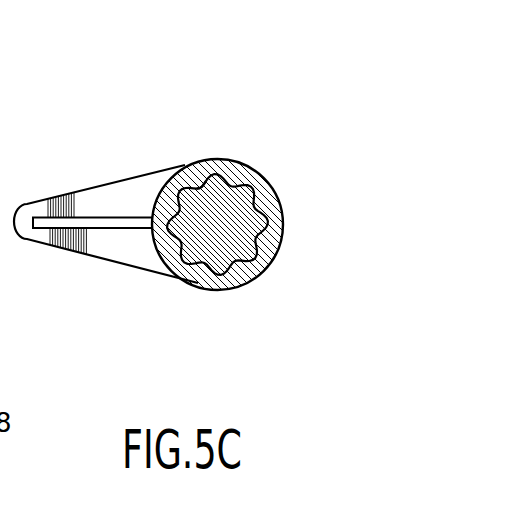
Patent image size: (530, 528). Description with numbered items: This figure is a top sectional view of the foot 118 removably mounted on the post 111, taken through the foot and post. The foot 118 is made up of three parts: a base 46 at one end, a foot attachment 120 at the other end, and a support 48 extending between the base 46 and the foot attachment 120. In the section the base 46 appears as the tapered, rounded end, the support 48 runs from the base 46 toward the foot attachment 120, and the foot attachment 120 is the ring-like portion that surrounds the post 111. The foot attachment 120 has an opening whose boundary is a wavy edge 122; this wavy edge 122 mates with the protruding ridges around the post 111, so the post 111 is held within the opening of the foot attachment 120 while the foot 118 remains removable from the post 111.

The base 46 is at (93, 203).
The support 48 is at (118, 218).
The post 111 is at (227, 208).
The foot 118 is at (131, 284).
The foot attachment 120 is at (283, 231).
The wavy edge 122 is at (203, 193).